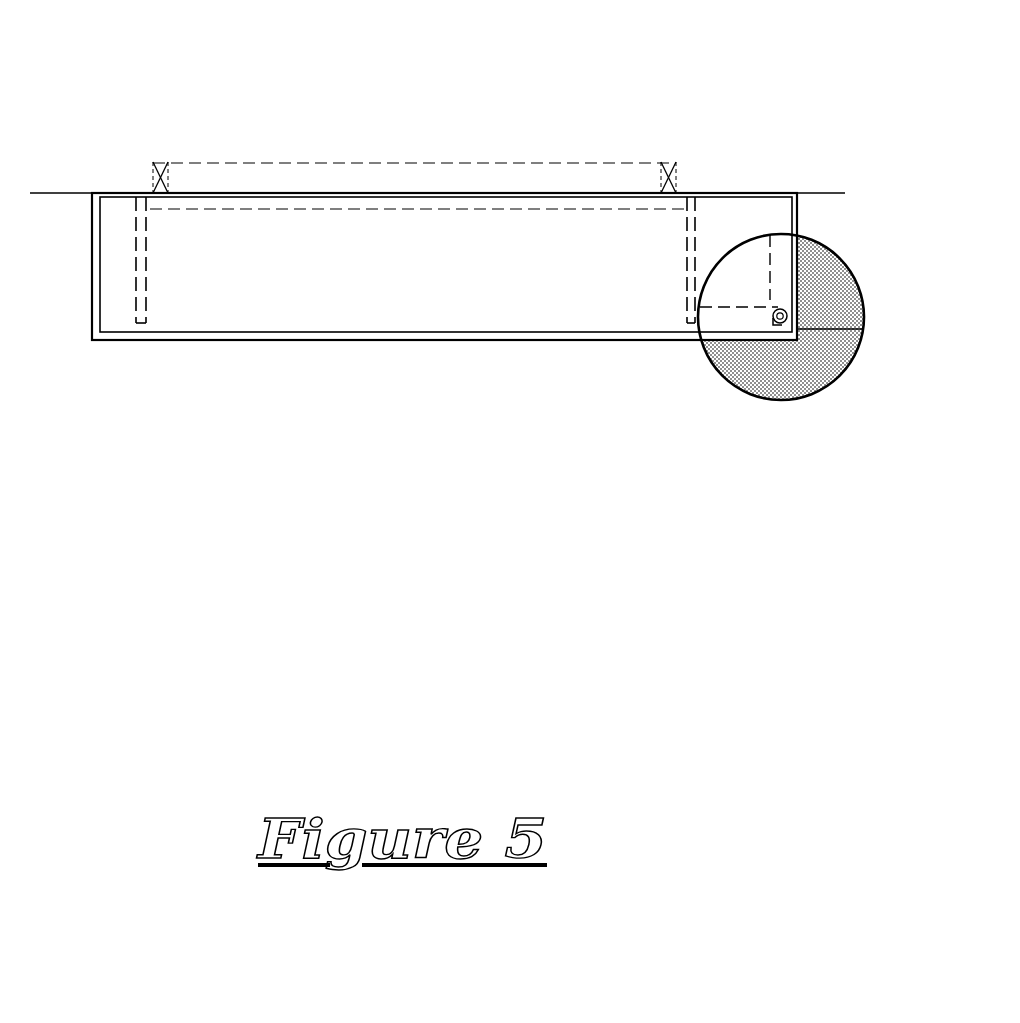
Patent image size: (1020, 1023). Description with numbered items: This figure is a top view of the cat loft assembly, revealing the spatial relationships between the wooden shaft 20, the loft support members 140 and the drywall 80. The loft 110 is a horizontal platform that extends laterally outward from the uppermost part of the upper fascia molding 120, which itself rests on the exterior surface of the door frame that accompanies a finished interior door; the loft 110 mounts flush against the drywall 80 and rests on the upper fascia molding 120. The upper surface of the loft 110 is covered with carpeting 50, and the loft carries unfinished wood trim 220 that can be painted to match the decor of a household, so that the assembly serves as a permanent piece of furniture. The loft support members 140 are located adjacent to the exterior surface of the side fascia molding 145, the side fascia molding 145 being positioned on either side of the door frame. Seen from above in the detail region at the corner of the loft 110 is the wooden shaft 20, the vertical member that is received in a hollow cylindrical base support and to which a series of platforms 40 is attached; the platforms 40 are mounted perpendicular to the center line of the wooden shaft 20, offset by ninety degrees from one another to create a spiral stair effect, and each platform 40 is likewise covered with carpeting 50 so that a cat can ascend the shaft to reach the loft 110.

The wooden shaft 20 is at (776, 326).
The platform 40 is at (712, 373).
The carpeting 50 is at (783, 352).
The drywall 80 is at (56, 193).
The loft 110 is at (272, 312).
The upper fascia molding 120 is at (418, 294).
The loft support member 140 is at (142, 323).
The side fascia molding 145 is at (675, 192).
The unfinished wood trim 220 is at (92, 342).